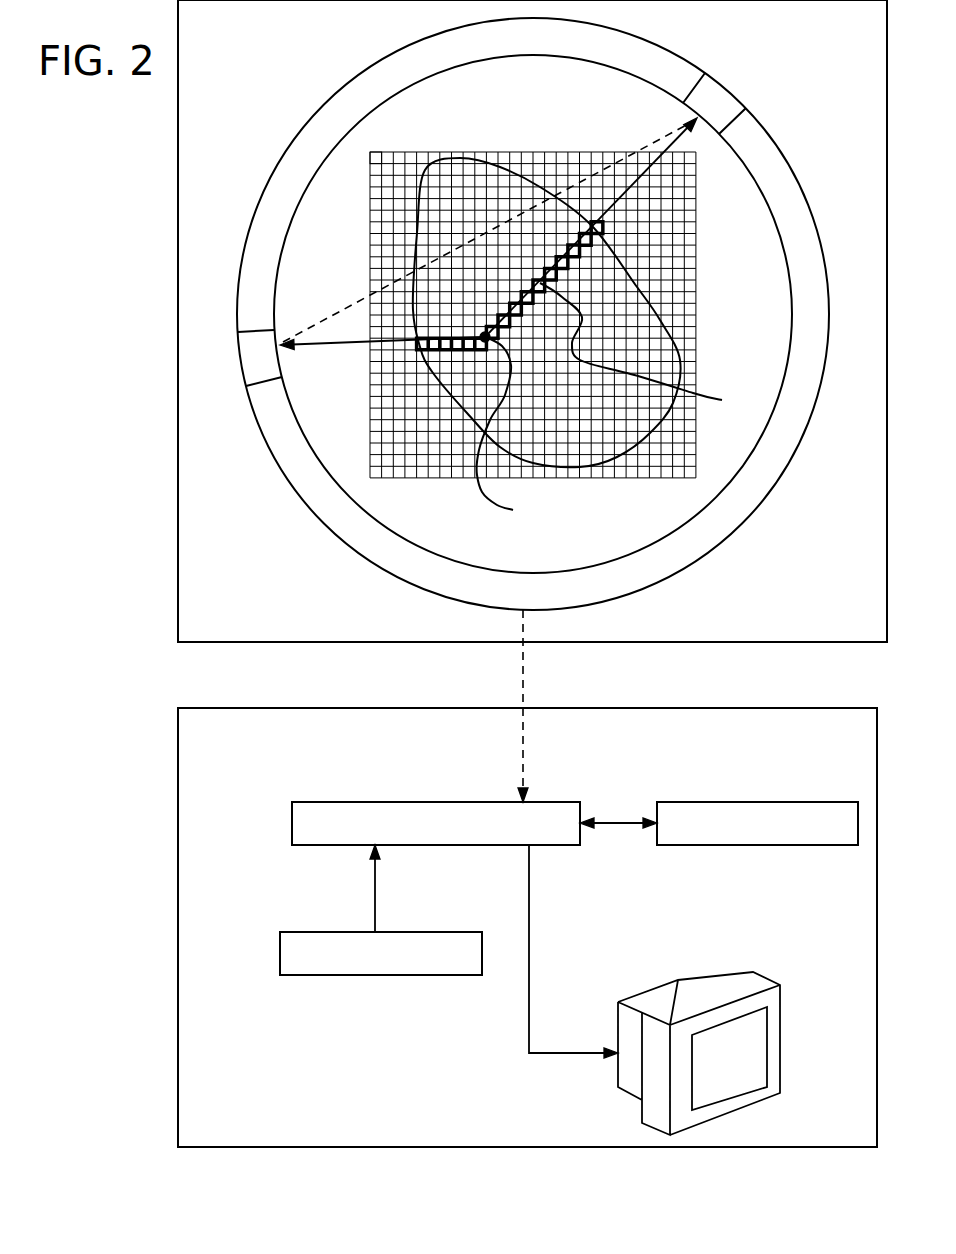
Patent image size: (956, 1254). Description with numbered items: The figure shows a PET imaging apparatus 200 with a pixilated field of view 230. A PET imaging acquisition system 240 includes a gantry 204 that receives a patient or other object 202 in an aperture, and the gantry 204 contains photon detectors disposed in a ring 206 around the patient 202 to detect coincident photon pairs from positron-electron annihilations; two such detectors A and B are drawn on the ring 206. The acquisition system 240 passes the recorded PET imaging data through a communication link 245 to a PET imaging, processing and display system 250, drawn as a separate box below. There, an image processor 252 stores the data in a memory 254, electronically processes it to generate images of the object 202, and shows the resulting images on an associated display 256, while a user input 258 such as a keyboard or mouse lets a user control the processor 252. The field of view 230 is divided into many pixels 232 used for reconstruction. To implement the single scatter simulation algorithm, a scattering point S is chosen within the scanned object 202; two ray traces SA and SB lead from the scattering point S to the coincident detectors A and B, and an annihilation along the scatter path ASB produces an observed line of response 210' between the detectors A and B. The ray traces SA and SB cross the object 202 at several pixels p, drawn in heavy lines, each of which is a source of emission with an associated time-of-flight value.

The PET imaging apparatus 200 is at (118, 617).
The patient or other object 202 is at (662, 318).
The gantry 204 is at (228, 645).
The detector ring 206 is at (695, 560).
The observed line of response 210' is at (486, 216).
The field of view 230 is at (423, 152).
The pixel 232 is at (372, 158).
The PET imaging acquisition system 240 is at (605, 652).
The communication link 245 is at (522, 650).
The PET imaging, processing and display system 250 is at (593, 1162).
The image processor 252 is at (333, 800).
The memory 254 is at (698, 800).
The display 256 is at (710, 985).
The user input 258 is at (322, 930).
The detector A is at (722, 90).
The detector B is at (237, 355).
The ray trace SA is at (688, 142).
The ray trace SB is at (335, 345).
The scattering point S is at (505, 434).
The pixels crossed by ray traces p is at (641, 348).